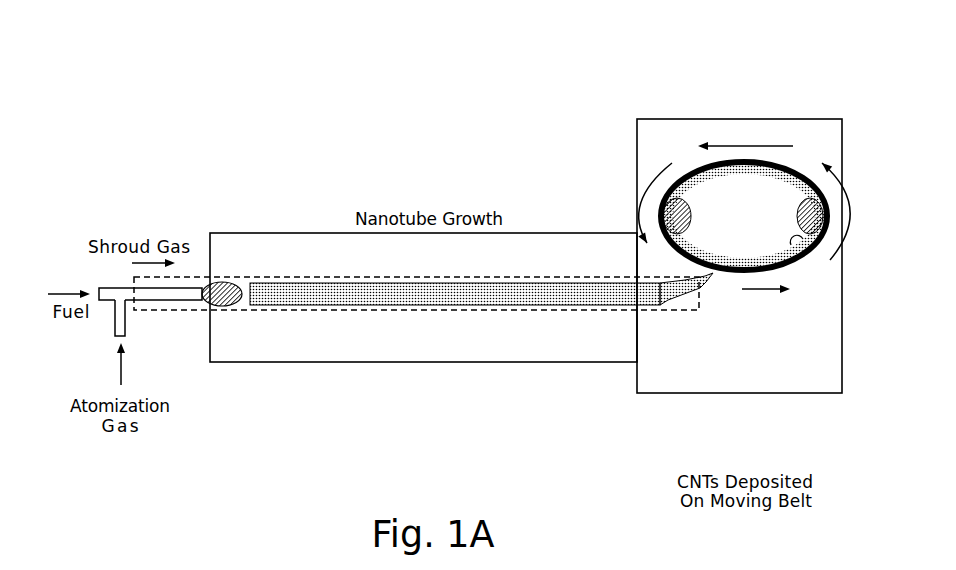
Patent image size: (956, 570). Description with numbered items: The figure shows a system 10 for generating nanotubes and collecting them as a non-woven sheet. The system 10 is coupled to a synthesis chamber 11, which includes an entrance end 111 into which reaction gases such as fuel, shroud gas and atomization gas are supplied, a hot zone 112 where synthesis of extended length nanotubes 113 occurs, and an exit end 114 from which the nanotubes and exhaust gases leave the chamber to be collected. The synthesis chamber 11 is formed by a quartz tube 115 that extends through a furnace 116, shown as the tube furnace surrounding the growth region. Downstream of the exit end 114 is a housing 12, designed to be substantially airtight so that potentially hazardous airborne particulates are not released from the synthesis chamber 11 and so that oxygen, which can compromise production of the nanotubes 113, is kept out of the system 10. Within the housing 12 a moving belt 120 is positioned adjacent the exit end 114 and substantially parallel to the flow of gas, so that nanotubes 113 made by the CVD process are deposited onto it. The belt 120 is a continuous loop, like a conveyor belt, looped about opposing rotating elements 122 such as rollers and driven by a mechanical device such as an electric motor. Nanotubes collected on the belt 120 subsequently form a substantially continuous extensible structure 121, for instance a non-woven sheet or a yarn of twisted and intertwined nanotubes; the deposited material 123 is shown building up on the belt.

The system 10 is at (498, 78).
The synthesis chamber 11 is at (230, 277).
The entrance end 111 is at (130, 313).
The hot zone 112 is at (283, 272).
The nanotubes 113 is at (712, 275).
The exit end 114 is at (700, 312).
The quartz tube 115 is at (302, 310).
The furnace 116 is at (540, 362).
The housing 12 is at (747, 119).
The moving belt 120 is at (803, 247).
The continuous extensible structure 121 is at (690, 172).
The rotating elements 122 is at (692, 213).
The carbon nanotube deposit 123 is at (795, 236).